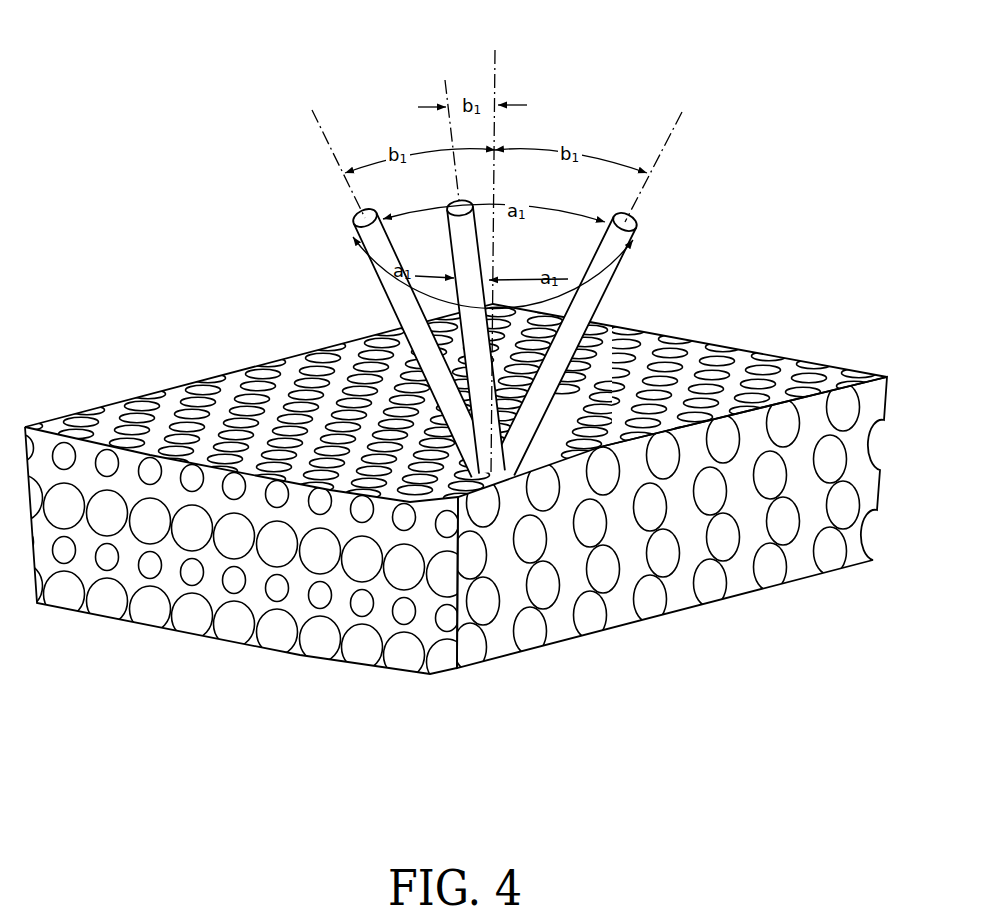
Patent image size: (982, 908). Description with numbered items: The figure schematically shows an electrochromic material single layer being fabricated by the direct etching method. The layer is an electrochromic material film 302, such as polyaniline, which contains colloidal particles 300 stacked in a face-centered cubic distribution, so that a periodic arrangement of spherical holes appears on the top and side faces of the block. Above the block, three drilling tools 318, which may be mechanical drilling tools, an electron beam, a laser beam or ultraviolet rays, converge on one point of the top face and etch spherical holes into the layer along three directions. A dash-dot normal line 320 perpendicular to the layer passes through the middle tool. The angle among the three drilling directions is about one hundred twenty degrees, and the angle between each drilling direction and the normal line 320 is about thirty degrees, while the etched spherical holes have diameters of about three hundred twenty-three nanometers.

The colloidal particles 300 is at (142, 510).
The electrochromic material film 302 is at (497, 635).
The drilling tools 318 is at (389, 296).
The normal line 320 is at (497, 53).